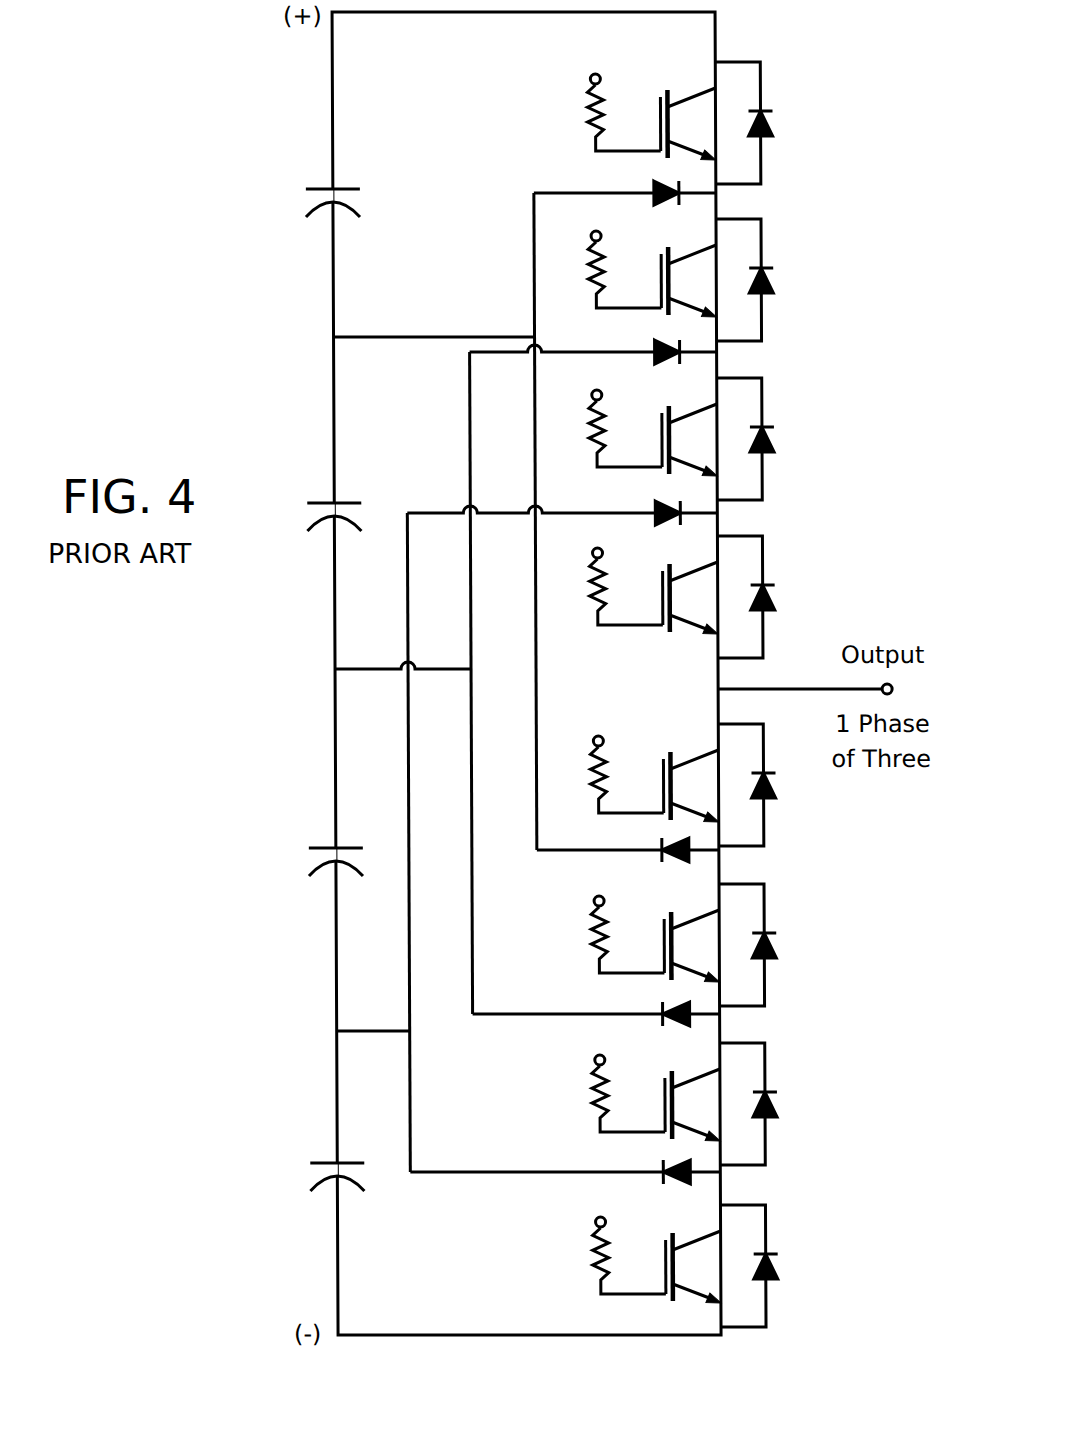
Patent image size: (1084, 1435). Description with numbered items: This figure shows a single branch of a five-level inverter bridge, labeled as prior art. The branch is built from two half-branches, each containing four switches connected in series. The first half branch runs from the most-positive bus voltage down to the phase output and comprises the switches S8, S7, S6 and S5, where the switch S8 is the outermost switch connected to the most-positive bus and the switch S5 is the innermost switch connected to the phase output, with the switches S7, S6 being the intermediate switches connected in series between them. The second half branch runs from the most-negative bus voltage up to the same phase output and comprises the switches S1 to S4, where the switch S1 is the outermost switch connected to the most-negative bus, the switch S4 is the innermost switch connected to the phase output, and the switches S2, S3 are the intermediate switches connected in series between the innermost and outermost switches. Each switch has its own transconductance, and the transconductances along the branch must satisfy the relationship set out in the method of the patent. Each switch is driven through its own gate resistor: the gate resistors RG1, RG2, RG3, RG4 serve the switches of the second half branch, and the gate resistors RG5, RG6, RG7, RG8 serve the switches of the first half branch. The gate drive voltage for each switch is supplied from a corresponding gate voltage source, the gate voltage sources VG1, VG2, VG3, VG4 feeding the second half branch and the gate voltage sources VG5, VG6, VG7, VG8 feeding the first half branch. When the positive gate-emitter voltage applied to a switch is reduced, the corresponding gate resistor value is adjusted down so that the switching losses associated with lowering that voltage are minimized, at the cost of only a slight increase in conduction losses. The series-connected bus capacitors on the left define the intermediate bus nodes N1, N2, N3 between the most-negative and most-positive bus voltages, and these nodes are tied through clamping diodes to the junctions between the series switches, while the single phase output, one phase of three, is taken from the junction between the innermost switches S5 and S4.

The switch S1 is at (721, 1266).
The switch S2 is at (721, 1104).
The switch S3 is at (720, 945).
The switch S4 is at (719, 785).
The switch S5 is at (718, 597).
The switch S6 is at (718, 439).
The switch S7 is at (717, 280).
The switch S8 is at (716, 123).
The gate resistor RG1 is at (629, 1261).
The gate resistor RG2 is at (628, 1099).
The gate resistor RG3 is at (627, 940).
The gate resistor RG4 is at (626, 780).
The gate resistor RG5 is at (626, 592).
The gate resistor RG6 is at (625, 434).
The gate resistor RG7 is at (624, 275).
The gate resistor RG8 is at (623, 118).
The gate voltage source VG1 is at (603, 1208).
The gate voltage source VG2 is at (603, 1046).
The gate voltage source VG3 is at (602, 887).
The gate voltage source VG4 is at (601, 727).
The gate voltage source VG5 is at (600, 539).
The gate voltage source VG6 is at (600, 381).
The gate voltage source VG7 is at (599, 222).
The gate voltage source VG8 is at (598, 65).
The intermediate bus node N1 is at (340, 1037).
The intermediate bus node N2 is at (369, 671).
The intermediate bus node N3 is at (400, 340).